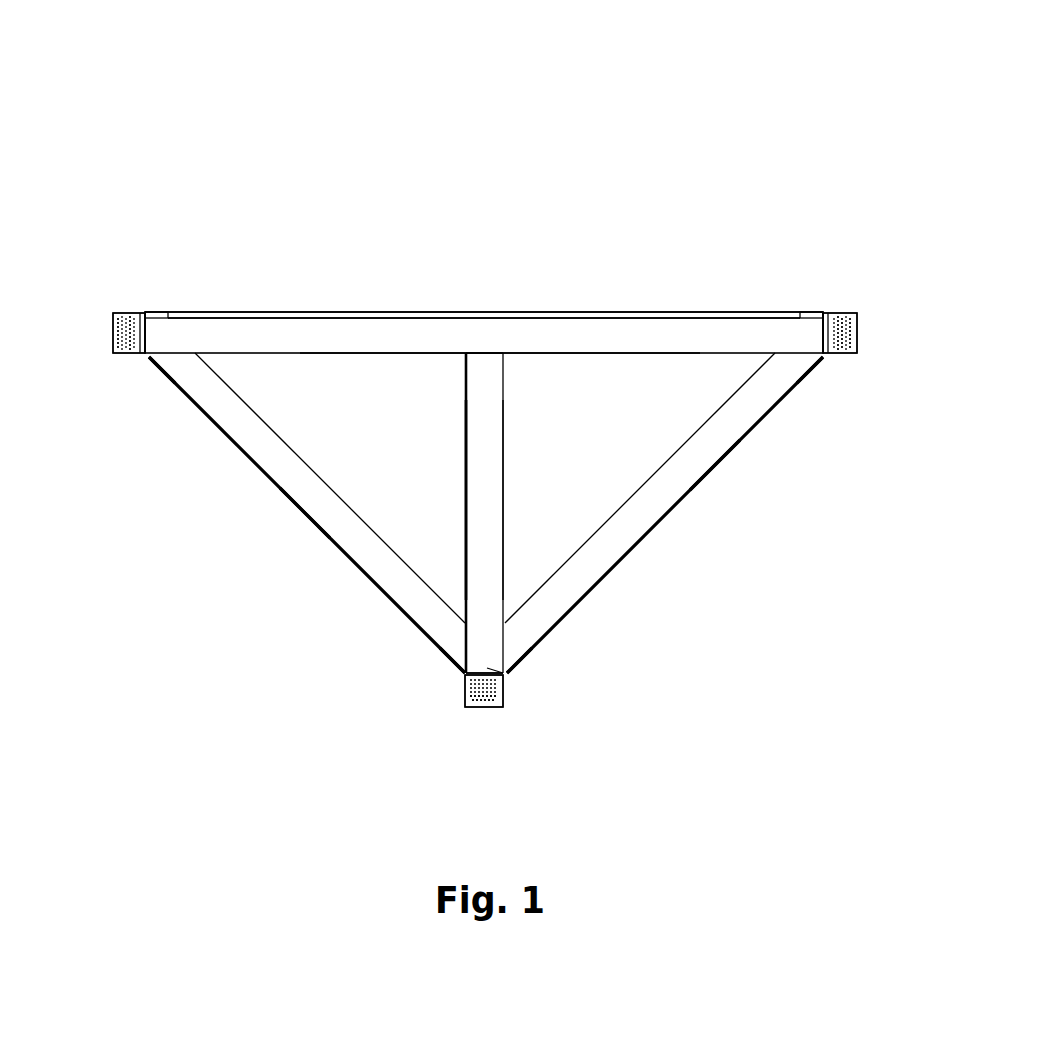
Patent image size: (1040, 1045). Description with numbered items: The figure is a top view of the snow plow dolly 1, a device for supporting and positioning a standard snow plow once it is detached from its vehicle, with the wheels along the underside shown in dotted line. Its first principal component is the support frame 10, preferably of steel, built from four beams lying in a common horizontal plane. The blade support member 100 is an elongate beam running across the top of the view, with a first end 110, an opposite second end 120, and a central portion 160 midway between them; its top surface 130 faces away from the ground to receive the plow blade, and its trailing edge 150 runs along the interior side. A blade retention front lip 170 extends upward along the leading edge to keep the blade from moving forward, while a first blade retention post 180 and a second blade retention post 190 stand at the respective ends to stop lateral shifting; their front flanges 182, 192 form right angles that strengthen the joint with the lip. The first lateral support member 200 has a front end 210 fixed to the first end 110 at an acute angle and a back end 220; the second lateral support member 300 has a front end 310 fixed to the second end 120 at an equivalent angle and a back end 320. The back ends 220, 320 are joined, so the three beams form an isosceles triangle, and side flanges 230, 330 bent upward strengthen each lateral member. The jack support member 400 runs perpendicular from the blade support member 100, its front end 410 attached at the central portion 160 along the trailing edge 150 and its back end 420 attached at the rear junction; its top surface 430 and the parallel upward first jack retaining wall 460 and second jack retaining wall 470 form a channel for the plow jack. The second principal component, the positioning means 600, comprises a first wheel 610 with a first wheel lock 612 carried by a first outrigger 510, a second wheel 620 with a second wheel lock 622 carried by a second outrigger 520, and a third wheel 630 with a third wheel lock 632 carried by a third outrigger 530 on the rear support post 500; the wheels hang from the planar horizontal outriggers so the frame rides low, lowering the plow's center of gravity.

The snow plow dolly 1 is at (232, 197).
The support frame 10 is at (478, 308).
The blade support member 100 is at (522, 318).
The first end 110 is at (152, 326).
The second end 120 is at (810, 313).
The top surface 130 is at (568, 335).
The trailing edge 150 is at (653, 355).
The central portion 160 is at (483, 338).
The blade retention front lip 170 is at (398, 314).
The first blade retention post 180 is at (141, 353).
The front flange 182 is at (153, 336).
The second blade retention post 190 is at (832, 357).
The front flange 192 is at (810, 332).
The first lateral support member 200 is at (282, 473).
The front end 210 is at (167, 355).
The back end 220 is at (460, 657).
The side flange 230 is at (313, 525).
The second lateral support member 300 is at (660, 503).
The front end 310 is at (797, 358).
The back end 320 is at (512, 652).
The side flange 330 is at (708, 470).
The jack support member 400 is at (465, 485).
The front end 410 is at (482, 358).
The back end 420 is at (507, 676).
The top surface 430 is at (487, 520).
The first jack retaining wall 460 is at (467, 528).
The second jack retaining wall 470 is at (503, 427).
The rear support post 500 is at (464, 680).
The first outrigger 510 is at (126, 313).
The second outrigger 520 is at (853, 316).
The third outrigger 530 is at (505, 707).
The positioning means 600 is at (858, 338).
The first wheel 610 is at (118, 345).
The first wheel lock 612 is at (120, 328).
The second wheel 620 is at (857, 348).
The second wheel lock 622 is at (858, 333).
The third wheel 630 is at (468, 708).
The third wheel lock 632 is at (489, 708).